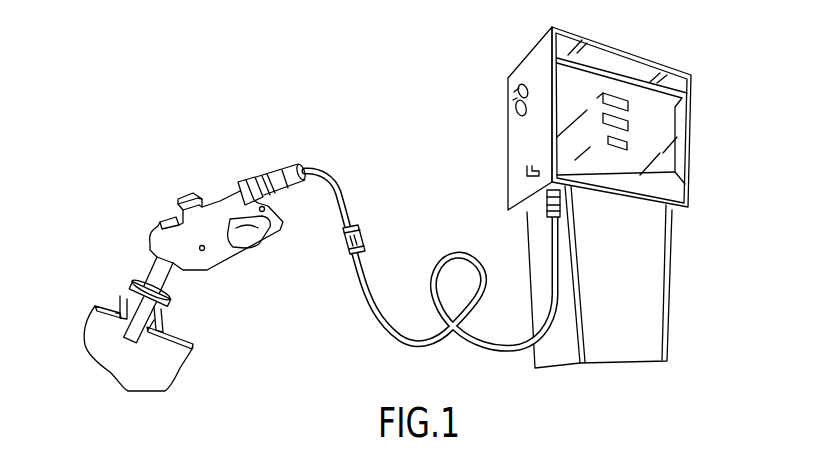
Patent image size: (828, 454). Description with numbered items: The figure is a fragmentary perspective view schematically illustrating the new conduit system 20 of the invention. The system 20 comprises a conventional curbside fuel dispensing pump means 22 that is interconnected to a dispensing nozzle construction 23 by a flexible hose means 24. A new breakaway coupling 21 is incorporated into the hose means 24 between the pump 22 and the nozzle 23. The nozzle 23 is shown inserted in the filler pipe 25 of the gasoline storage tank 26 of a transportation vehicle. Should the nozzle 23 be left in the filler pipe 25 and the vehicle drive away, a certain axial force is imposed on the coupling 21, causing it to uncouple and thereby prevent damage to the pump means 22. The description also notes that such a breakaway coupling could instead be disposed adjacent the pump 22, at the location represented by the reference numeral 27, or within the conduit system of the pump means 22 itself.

The conduit system 20 is at (372, 206).
The breakaway coupling 21 is at (372, 236).
The fuel dispensing pump means 22 is at (537, 57).
The dispensing nozzle construction 23 is at (157, 237).
The flexible hose means 24 is at (358, 290).
The filler pipe 25 is at (113, 306).
The gasoline storage tank 26 is at (193, 330).
The breakaway coupling location adjacent the pump 27 is at (546, 198).